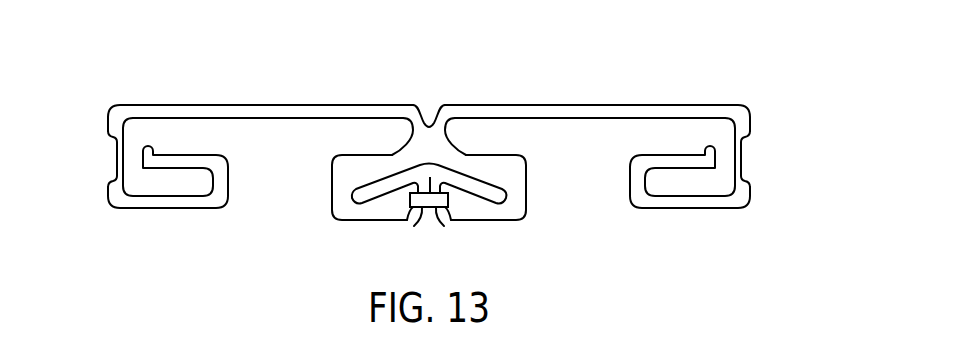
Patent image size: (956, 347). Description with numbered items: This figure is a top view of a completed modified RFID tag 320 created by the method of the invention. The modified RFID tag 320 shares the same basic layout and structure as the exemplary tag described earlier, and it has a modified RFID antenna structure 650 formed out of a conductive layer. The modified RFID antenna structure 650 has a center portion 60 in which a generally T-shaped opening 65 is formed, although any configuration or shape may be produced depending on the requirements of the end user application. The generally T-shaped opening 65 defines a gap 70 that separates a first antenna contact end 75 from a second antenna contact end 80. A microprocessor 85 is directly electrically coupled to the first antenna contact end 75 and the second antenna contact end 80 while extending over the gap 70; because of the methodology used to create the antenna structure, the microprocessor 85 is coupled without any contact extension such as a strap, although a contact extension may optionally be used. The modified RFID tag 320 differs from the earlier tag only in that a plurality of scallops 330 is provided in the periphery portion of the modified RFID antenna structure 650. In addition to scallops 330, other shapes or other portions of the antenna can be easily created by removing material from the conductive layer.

The modified RFID tag 320 is at (627, 78).
The scallops 330 is at (110, 158).
The modified RFID antenna structure 650 is at (718, 200).
The center portion 60 is at (523, 175).
The generally T-shaped opening 65 is at (357, 194).
The gap 70 is at (428, 210).
The first antenna contact end 75 is at (408, 224).
The second antenna contact end 80 is at (452, 224).
The microprocessor 85 is at (430, 177).